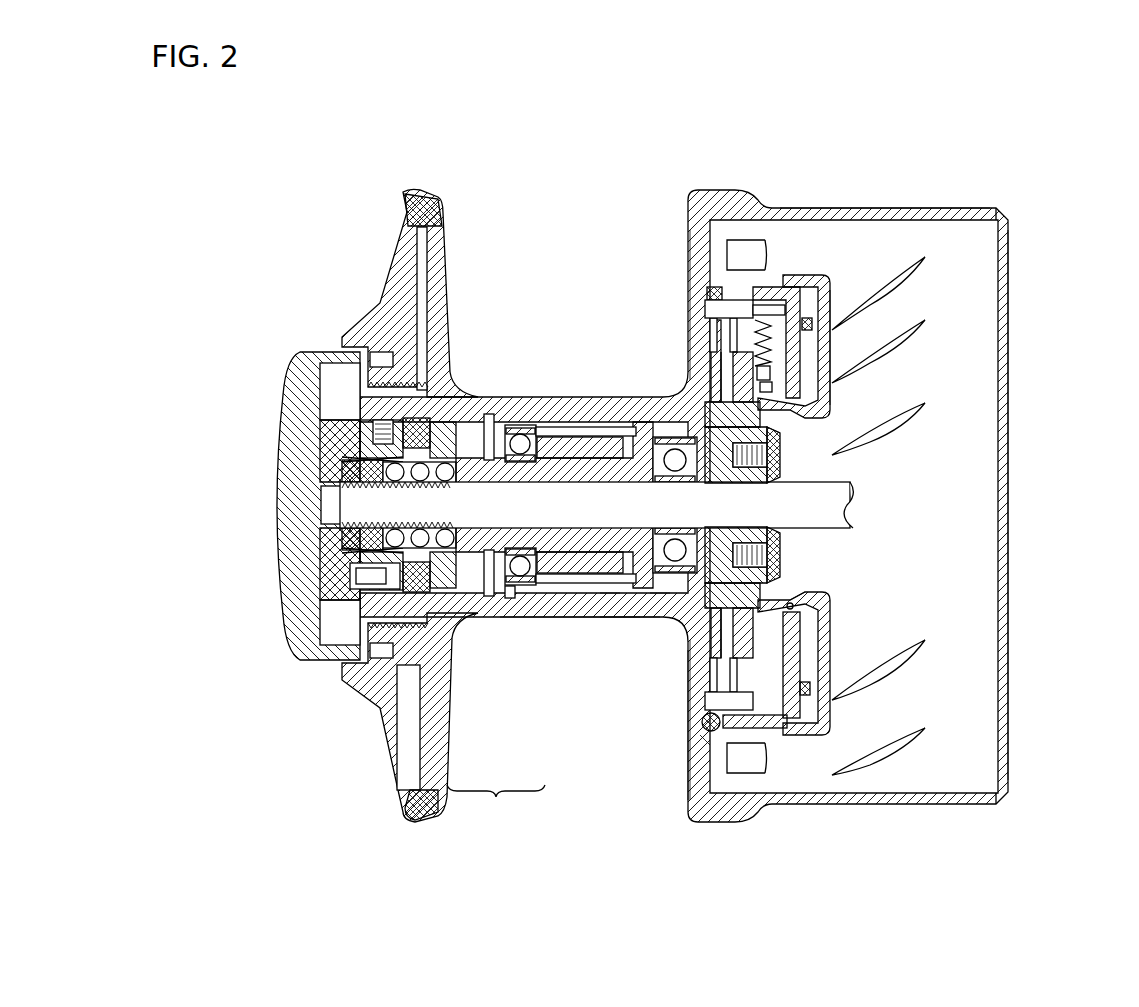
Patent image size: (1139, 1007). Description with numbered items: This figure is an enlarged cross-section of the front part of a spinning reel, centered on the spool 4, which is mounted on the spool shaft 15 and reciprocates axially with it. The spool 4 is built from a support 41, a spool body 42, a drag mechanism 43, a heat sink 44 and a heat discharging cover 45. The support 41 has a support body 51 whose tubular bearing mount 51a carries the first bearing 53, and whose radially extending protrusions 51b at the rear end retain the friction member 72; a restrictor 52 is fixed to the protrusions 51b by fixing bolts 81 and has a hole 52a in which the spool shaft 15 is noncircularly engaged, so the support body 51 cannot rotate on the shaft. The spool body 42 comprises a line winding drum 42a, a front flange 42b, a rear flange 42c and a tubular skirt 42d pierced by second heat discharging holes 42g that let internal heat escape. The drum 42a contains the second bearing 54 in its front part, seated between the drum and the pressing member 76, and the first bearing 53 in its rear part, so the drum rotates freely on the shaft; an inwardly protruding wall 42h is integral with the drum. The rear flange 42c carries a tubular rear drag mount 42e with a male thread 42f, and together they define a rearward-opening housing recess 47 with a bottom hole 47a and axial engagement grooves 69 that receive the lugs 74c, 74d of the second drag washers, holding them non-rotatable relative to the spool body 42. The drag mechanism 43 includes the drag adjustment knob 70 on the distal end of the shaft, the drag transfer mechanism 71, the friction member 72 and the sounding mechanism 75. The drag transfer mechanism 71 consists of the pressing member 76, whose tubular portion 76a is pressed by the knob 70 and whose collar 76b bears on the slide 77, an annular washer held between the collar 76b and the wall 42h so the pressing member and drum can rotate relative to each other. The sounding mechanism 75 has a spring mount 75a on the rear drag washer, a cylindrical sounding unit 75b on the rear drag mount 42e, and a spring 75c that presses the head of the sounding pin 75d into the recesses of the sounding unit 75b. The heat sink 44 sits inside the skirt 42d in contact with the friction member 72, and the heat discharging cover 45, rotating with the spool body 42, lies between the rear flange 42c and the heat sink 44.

The spool 4 is at (1020, 205).
The spool shaft 15 is at (852, 503).
The support 41 is at (525, 602).
The spool body 42 is at (803, 188).
The line winding drum 42a is at (520, 400).
The front flange 42b is at (440, 252).
The rear flange 42c is at (690, 240).
The skirt 42d is at (925, 208).
The rear drag mount 42e is at (700, 718).
The male thread 42f is at (702, 740).
The second heat discharging holes 42g is at (752, 250).
The wall 42h is at (578, 600).
The drag mechanism 43 is at (712, 325).
The heat sink 44 is at (835, 325).
The heat discharging cover 45 is at (805, 290).
The housing recess 47 is at (757, 672).
The bottom hole 47a is at (792, 586).
The support body 51 is at (656, 677).
The bearing mount 51a is at (615, 620).
The protrusions 51b is at (665, 620).
The restrictor 52 is at (777, 570).
The hole 52a is at (790, 432).
The first bearing 53 is at (660, 418).
The second bearing 54 is at (488, 420).
The engagement grooves 69 is at (796, 708).
The drag adjustment knob 70 is at (267, 578).
The drag transfer mechanism 71 is at (496, 804).
The friction member 72 is at (715, 366).
The lug 74c is at (800, 605).
The lug 74d is at (762, 650).
The sounding mechanism 75 is at (939, 329).
The spring mount 75a is at (778, 378).
The sounding unit 75b is at (786, 307).
The spring 75c is at (790, 352).
The sounding pin 75d is at (802, 328).
The pressing member 76 is at (482, 600).
The tubular portion 76a is at (556, 412).
The collar 76b is at (606, 420).
The slide 77 is at (560, 618).
The fixing bolts 81 is at (797, 418).